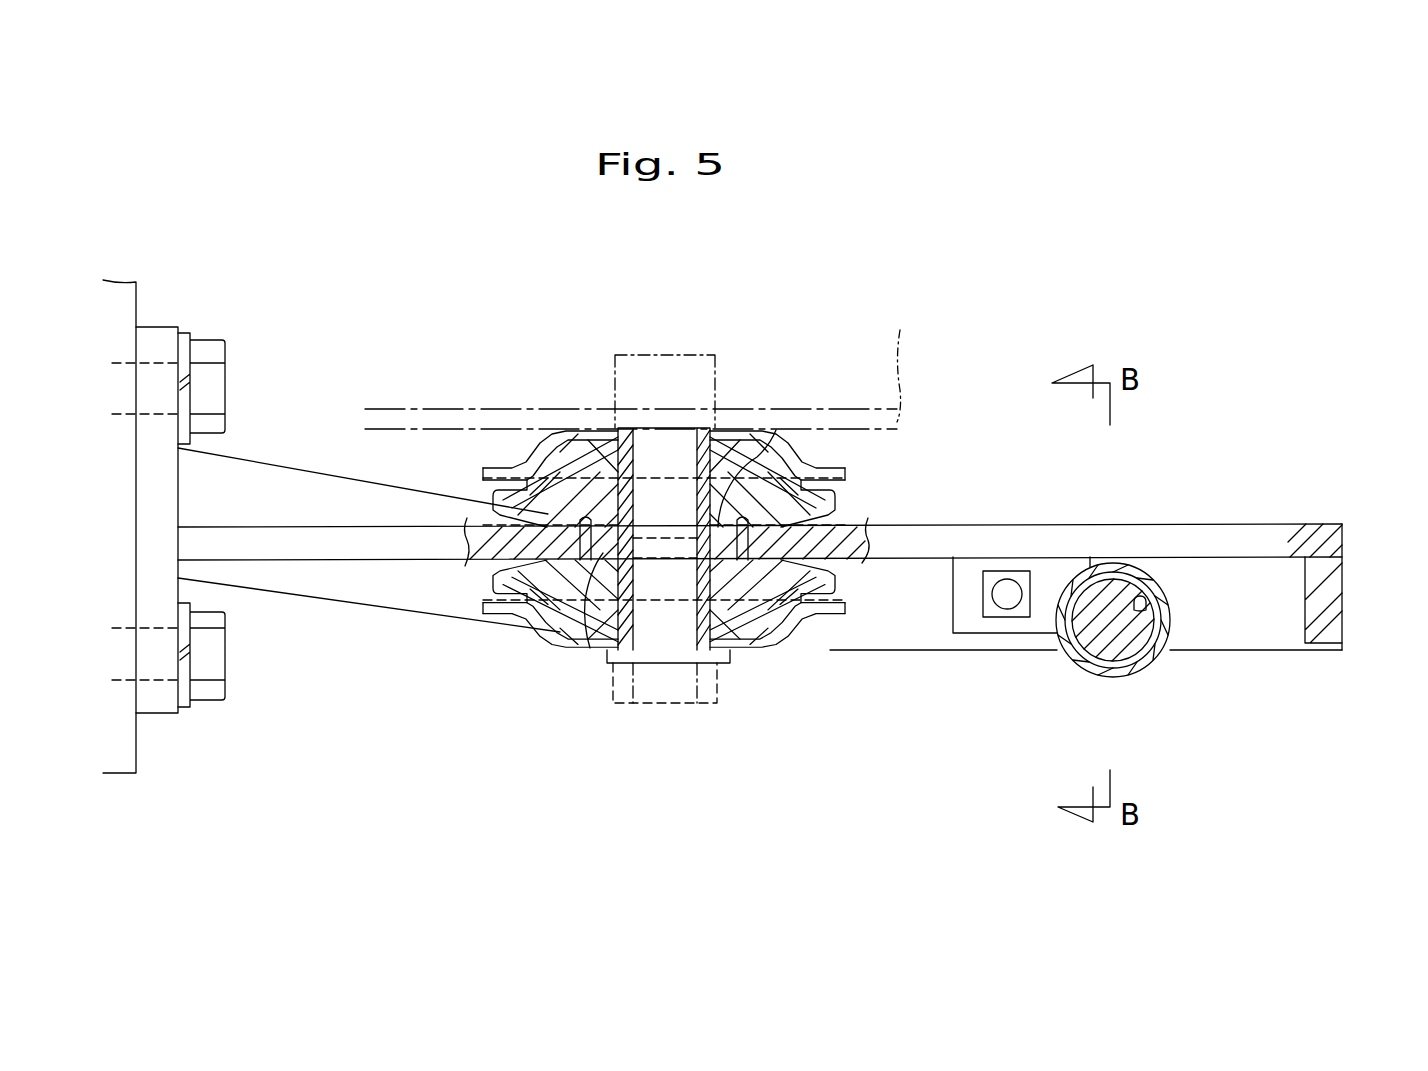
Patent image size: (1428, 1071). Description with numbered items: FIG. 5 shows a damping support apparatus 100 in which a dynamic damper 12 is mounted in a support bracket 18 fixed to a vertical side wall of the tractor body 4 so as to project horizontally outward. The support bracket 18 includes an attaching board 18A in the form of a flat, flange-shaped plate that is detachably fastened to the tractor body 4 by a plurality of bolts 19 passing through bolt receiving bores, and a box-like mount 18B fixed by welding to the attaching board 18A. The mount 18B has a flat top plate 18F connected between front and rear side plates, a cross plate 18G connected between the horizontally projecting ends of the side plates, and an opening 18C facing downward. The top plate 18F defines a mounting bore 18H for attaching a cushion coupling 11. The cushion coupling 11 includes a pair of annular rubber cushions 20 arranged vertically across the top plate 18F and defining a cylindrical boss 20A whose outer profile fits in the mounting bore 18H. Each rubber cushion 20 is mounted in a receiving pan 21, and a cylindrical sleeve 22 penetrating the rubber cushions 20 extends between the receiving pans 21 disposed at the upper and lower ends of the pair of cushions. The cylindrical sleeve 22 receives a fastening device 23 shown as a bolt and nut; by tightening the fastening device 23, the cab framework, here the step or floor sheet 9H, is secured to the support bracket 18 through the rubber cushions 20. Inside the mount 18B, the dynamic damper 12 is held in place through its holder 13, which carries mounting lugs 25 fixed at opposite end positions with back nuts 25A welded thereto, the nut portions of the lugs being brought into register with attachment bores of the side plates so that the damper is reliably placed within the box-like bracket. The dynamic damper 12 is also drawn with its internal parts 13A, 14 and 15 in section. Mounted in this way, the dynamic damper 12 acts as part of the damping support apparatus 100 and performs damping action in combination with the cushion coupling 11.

The tractor body 4 is at (128, 756).
The step 9H is at (897, 418).
The cushion coupling 11 is at (503, 663).
The dynamic damper 12 is at (1161, 682).
The holder 13 is at (1078, 665).
The pipe hole 13A is at (1142, 605).
The shaft 14 is at (1110, 682).
The bearing ring 15 is at (1130, 640).
The support bracket 18 is at (349, 628).
The attaching board 18A is at (157, 328).
The mount 18B is at (1070, 520).
The opening 18C is at (887, 632).
The top plate 18F is at (960, 535).
The cross plate 18G is at (1332, 598).
The mounting bore 18H is at (833, 520).
The bolt 19 is at (214, 386).
The rubber cushion 20 is at (567, 460).
The cylindrical boss 20A is at (776, 430).
The receiving pan 21 is at (522, 440).
The cylindrical sleeve 22 is at (612, 640).
The fastening device 23 is at (685, 690).
The mounting lug 25 is at (973, 625).
The back nut 25A is at (1020, 617).
The damping support apparatus 100 is at (1000, 335).